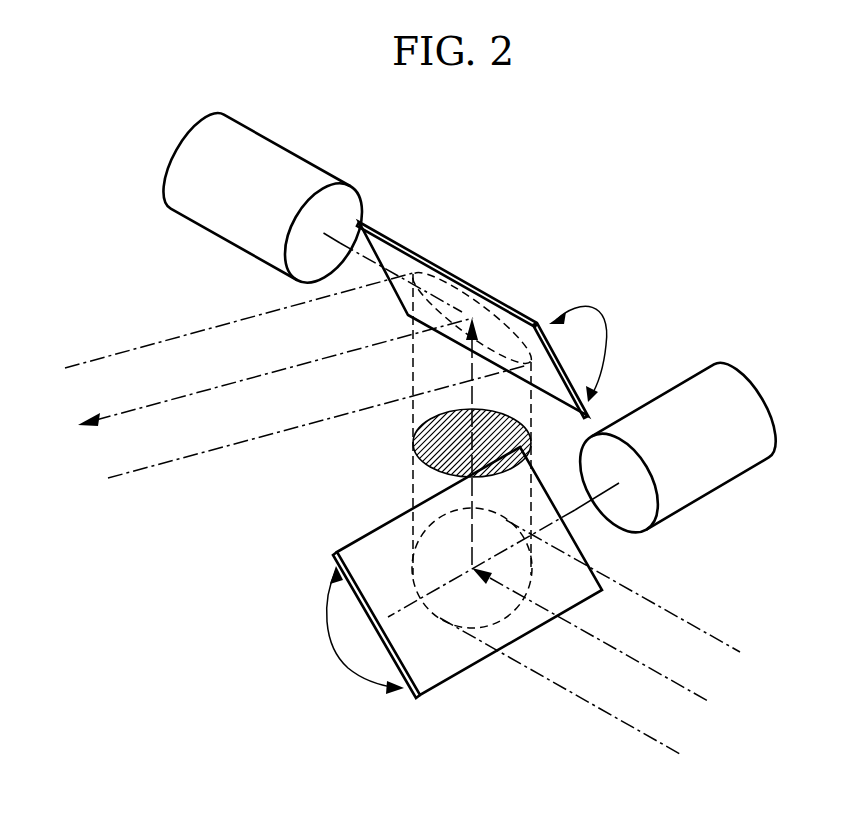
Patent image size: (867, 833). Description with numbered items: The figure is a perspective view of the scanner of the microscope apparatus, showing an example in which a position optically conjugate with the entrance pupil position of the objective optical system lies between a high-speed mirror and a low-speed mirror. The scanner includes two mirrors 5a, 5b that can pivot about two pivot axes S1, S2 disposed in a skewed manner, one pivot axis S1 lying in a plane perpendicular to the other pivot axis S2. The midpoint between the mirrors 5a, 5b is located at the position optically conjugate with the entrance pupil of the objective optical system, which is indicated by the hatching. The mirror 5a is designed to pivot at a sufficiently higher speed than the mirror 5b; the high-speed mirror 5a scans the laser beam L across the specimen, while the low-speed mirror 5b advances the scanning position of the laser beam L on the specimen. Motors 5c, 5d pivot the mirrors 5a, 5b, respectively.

The high-speed mirror 5a is at (453, 675).
The low-speed mirror 5b is at (393, 236).
The motor 5c is at (737, 387).
The motor 5d is at (303, 158).
The pivot axis S1 is at (575, 510).
The pivot axis S2 is at (337, 244).
The laser beam L is at (712, 637).